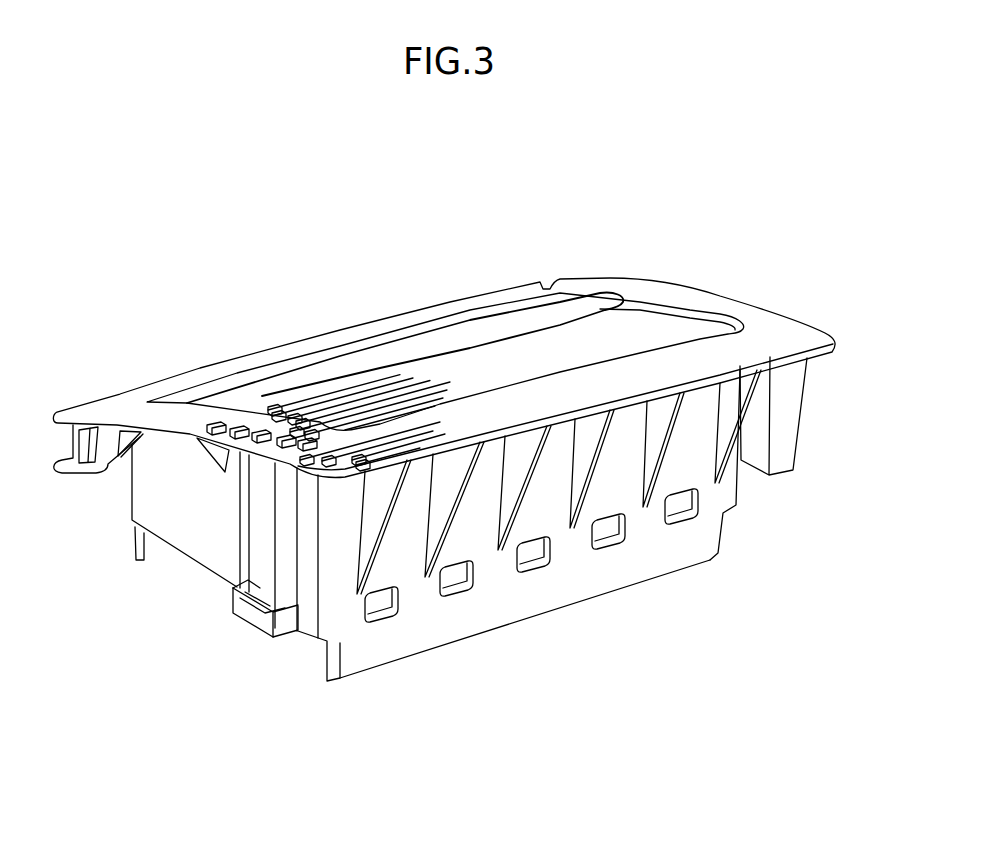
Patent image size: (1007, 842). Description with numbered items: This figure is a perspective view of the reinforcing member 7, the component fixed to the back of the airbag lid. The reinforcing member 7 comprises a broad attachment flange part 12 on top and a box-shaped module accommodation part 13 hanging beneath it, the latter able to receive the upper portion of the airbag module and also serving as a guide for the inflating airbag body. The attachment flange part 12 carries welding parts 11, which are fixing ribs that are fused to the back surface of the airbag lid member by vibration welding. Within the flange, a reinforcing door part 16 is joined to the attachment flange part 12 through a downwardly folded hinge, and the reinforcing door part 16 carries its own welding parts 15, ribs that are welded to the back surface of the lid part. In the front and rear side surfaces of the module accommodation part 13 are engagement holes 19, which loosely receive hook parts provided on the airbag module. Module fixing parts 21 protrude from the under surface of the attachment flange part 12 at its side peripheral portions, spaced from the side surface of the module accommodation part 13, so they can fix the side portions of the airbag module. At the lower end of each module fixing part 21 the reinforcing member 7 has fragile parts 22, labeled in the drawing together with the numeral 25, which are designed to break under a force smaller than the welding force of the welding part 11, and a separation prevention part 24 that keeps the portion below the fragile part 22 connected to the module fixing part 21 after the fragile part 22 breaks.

The reinforcing member 7 is at (645, 197).
The welding parts 11 is at (214, 425).
The attachment flange part 12 is at (685, 287).
The module accommodation part 13 is at (637, 577).
The welding parts 15 is at (297, 418).
The reinforcing door part 16 is at (683, 331).
The engagement holes 19 is at (697, 512).
The module fixing parts 21 is at (240, 637).
The fragile parts 22 is at (234, 593).
The separation prevention part 24 is at (233, 584).
The protrusion 25 is at (262, 602).